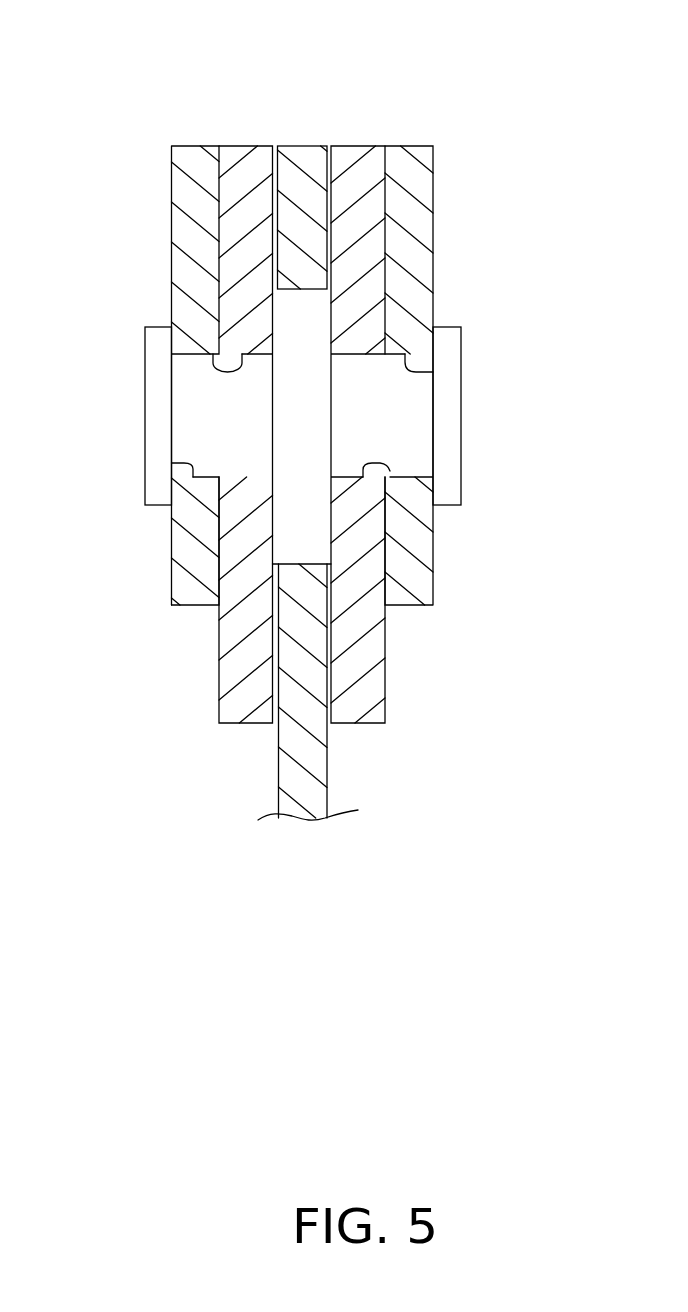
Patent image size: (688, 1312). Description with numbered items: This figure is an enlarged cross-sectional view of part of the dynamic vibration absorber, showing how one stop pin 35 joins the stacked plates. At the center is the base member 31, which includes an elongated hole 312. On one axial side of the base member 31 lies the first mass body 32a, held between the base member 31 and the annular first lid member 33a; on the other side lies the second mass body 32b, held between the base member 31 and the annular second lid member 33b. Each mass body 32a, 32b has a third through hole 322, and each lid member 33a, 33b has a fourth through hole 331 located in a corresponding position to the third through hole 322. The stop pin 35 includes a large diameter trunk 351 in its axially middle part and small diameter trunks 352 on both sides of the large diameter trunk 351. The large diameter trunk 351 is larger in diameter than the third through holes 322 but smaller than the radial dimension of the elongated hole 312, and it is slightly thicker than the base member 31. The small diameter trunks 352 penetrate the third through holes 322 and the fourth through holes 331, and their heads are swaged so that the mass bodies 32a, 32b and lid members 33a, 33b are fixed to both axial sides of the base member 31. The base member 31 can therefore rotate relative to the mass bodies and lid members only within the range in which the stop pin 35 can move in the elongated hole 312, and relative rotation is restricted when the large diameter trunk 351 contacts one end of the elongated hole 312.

The base member 31 is at (328, 773).
The elongated hole 312 is at (291, 296).
The first mass body 32a is at (250, 147).
The second mass body 32b is at (355, 147).
The first lid member 33a is at (190, 146).
The second lid member 33b is at (417, 147).
The third through hole 322 is at (214, 366).
The fourth through hole 331 is at (432, 370).
The stop pin 35 is at (462, 450).
The large diameter trunk 351 is at (300, 530).
The small diameter trunk 352 is at (202, 416).